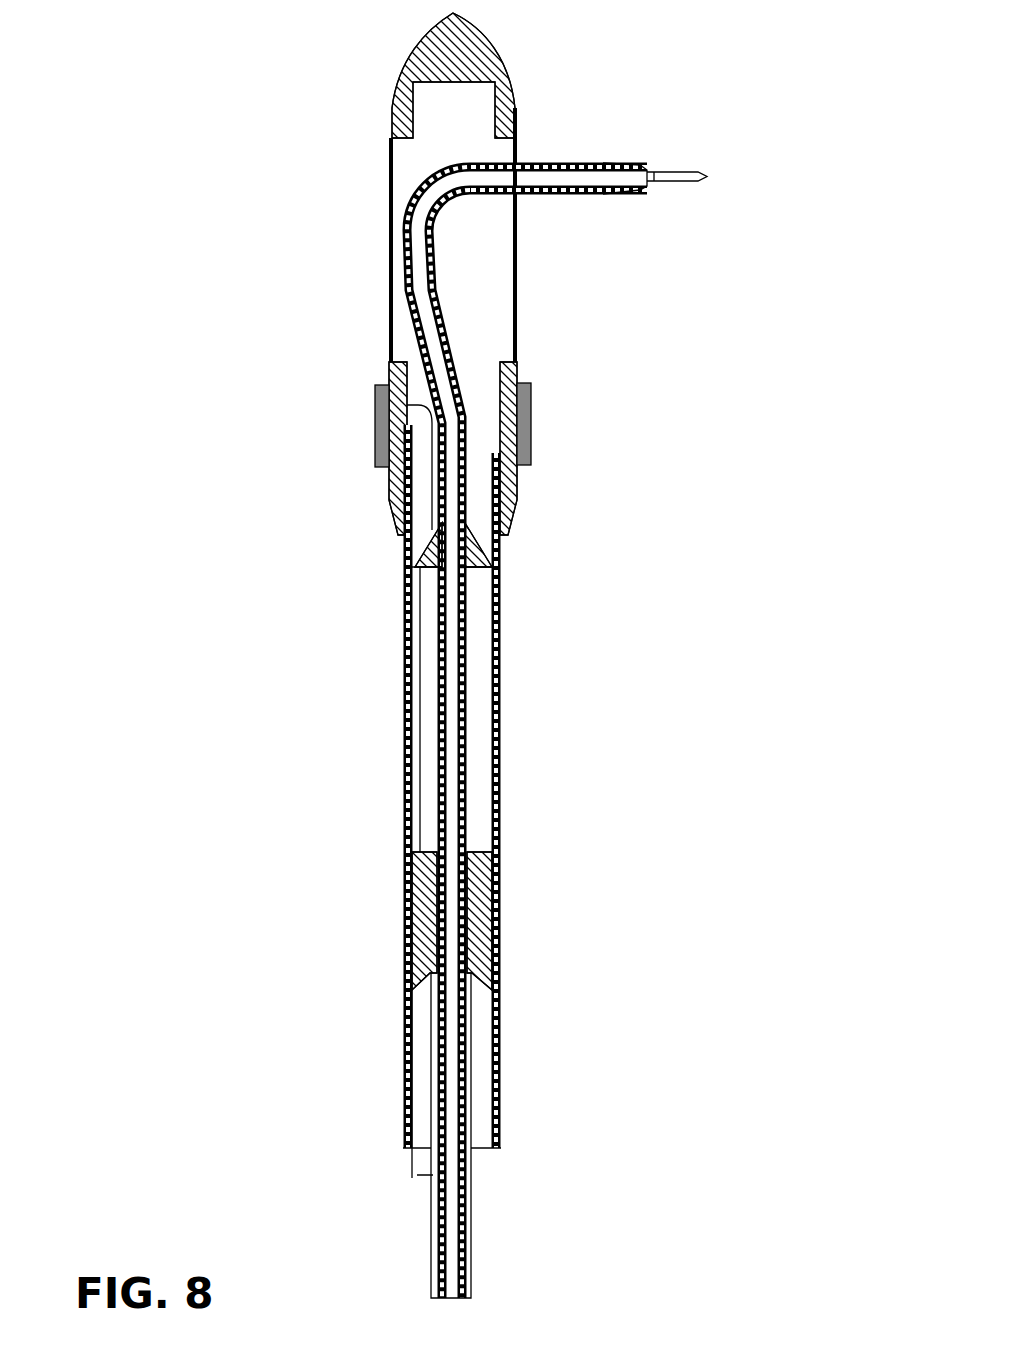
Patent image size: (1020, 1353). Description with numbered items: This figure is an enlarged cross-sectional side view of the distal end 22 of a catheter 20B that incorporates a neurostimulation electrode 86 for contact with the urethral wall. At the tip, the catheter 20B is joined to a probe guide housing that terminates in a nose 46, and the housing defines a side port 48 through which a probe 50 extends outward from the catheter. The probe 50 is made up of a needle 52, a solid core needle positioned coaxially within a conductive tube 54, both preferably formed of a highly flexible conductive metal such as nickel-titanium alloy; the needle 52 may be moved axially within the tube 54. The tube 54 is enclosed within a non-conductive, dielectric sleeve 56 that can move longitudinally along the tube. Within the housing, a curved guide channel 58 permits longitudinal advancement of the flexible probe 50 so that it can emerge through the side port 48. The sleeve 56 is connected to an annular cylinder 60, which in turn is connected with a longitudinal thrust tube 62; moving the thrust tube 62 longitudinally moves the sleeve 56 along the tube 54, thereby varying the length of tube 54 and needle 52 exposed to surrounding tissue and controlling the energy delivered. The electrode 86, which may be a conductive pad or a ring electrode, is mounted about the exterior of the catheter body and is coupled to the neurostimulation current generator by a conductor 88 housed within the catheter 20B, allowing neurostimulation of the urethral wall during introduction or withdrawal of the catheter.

The distal end 22 is at (322, 277).
The nose 46 is at (497, 50).
The side port 48 is at (530, 142).
The probe 50 is at (676, 216).
The needle 52 is at (666, 172).
The conductive tube 54 is at (623, 170).
The dielectric sleeve 56 is at (551, 192).
The guide channel 58 is at (436, 265).
The neurostimulation electrode 86 is at (527, 402).
The conductor 88 is at (422, 698).
The catheter 20B is at (502, 793).
The annular cylinder 60 is at (482, 930).
The thrust tube 62 is at (470, 1120).